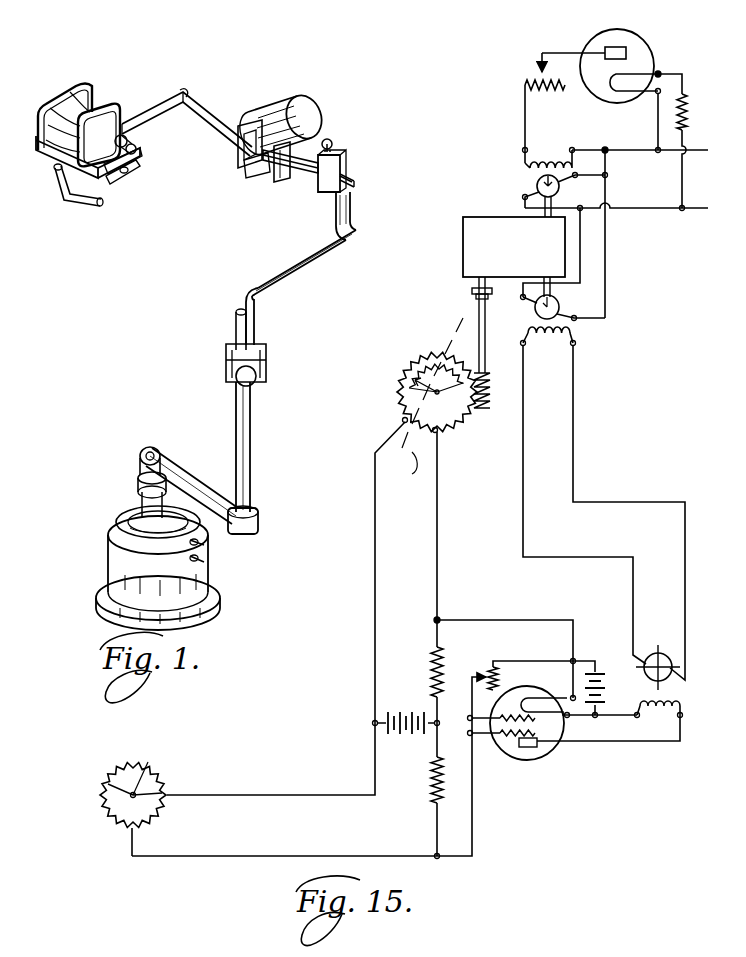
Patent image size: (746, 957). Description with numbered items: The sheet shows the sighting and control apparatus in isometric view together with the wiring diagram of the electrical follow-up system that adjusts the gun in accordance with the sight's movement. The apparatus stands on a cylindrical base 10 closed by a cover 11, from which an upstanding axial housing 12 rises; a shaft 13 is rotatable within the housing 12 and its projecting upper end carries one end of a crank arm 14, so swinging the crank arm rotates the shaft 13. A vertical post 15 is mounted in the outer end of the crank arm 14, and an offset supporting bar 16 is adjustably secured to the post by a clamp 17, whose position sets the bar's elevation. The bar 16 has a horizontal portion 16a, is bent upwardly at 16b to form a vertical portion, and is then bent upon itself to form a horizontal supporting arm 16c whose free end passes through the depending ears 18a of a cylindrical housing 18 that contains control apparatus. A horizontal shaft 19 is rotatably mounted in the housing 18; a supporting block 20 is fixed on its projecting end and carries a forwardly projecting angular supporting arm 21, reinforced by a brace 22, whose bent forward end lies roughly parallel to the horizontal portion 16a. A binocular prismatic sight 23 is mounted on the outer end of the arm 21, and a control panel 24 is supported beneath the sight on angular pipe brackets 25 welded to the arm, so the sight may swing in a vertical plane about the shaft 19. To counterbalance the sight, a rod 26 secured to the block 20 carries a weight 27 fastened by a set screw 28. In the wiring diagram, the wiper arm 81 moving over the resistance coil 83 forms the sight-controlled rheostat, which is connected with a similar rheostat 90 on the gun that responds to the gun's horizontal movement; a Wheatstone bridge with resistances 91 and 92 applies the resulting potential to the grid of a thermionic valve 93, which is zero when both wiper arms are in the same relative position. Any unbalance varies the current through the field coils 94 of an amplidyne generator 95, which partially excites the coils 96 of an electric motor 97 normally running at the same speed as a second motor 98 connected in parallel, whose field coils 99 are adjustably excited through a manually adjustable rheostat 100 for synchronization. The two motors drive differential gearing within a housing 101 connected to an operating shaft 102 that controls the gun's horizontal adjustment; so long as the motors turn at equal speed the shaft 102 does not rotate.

In FIG. 1, the base 10 is at (112, 560).
In FIG. 1, the cover 11 is at (116, 524).
In FIG. 1, the axial sleeve or housing 12 is at (134, 494).
In FIG. 1, the shaft 13 is at (144, 452).
In FIG. 1, the crank arm 14 is at (196, 482).
In FIG. 1, the vertically-extending post 15 is at (250, 424).
In FIG. 1, the offset supporting bar 16 is at (258, 310).
In FIG. 1, the horizontal portion 16a is at (306, 268).
In FIG. 1, the vertical portion 16b is at (358, 212).
In FIG. 1, the horizontal supporting arm 16c is at (300, 180).
In FIG. 1, the clamp 17 is at (266, 356).
In FIG. 1, the cylindrical housing or casing 18 is at (300, 100).
In FIG. 1, the depending ears or brackets 18a is at (276, 180).
In FIG. 1, the horizontal shaft 19 is at (236, 156).
In FIG. 1, the supporting block 20 is at (246, 176).
In FIG. 1, the angular supporting arm 21 is at (186, 92).
In FIG. 1, the brace 22 is at (208, 134).
In FIG. 1, the binocular prismatic sight 23 is at (90, 98).
In FIG. 1, the control panel 24 is at (114, 186).
In FIG. 1, the angular pipe members or brackets 25 is at (68, 202).
In FIG. 1, the horizontally extending rod 26 is at (331, 146).
In FIG. 1, the weight 27 is at (348, 166).
In FIG. 1, the set screw 28 is at (340, 152).
In FIG. 15, the wiper arm 81 is at (102, 800).
In FIG. 15, the resistance coil 83 is at (150, 762).
In FIG. 15, the rheostat 90 is at (426, 352).
In FIG. 15, the resistance 91 is at (432, 786).
In FIG. 15, the resistance 92 is at (432, 668).
In FIG. 15, the thermionic valve 93 is at (522, 760).
In FIG. 15, the field coils 94 is at (654, 712).
In FIG. 15, the amplidyne generator 95 is at (642, 674).
In FIG. 15, the coils 96 is at (552, 342).
In FIG. 15, the electric motor 97 is at (536, 316).
In FIG. 15, the second motor 98 is at (538, 182).
In FIG. 15, the field coils 99 is at (548, 160).
In FIG. 15, the manually adjustable rheostat 100 is at (528, 82).
In FIG. 15, the housing 101 is at (464, 254).
In FIG. 15, the operating shaft 102 is at (478, 306).